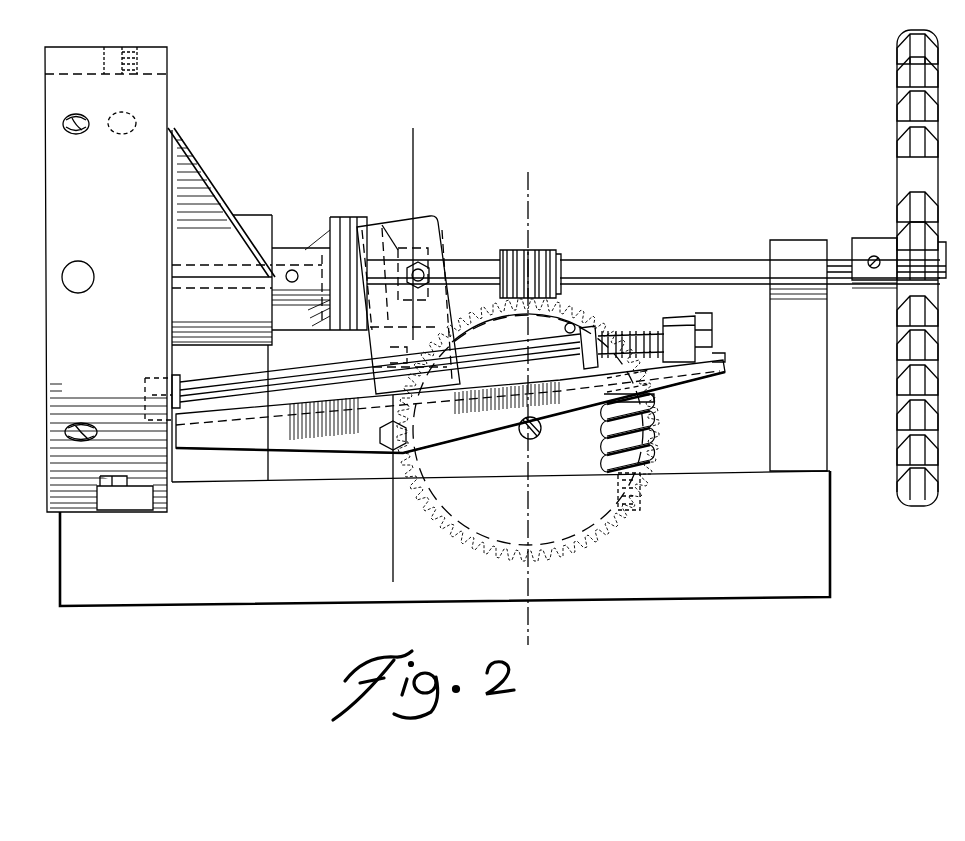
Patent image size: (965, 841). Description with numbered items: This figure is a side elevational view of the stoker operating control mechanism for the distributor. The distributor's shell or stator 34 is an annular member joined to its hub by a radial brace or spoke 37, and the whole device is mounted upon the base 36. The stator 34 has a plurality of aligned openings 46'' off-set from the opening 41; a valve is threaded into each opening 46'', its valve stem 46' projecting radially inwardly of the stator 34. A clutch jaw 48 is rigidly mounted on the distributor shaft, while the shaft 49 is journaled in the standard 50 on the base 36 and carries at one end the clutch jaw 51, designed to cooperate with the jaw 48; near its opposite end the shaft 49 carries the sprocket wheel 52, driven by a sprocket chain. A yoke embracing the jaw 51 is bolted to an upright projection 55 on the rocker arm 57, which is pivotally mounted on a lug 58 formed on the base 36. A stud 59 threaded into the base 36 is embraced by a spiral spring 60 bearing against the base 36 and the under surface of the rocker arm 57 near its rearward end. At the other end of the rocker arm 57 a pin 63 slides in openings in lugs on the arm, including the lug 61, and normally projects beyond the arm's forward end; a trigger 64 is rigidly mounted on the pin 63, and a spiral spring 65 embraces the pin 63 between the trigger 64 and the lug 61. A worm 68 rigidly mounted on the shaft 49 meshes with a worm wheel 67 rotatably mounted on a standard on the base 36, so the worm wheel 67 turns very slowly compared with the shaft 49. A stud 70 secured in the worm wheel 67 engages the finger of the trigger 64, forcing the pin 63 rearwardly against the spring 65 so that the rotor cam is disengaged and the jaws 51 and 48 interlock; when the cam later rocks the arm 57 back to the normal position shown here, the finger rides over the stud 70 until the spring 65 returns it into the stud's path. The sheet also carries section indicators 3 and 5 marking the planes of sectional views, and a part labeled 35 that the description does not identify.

The stator 34 is at (52, 178).
The bracket 35 is at (256, 226).
The base 36 is at (232, 600).
The radial brace 37 is at (205, 188).
The opening 41 is at (137, 120).
The valve stem 46' is at (87, 258).
The openings 46'' is at (87, 277).
The clutch jaw 48 is at (334, 220).
The shaft 49 is at (668, 263).
The standard 50 is at (778, 383).
The clutch jaw 51 is at (358, 218).
The sprocket wheel 52 is at (900, 425).
The upright projection 55 is at (376, 345).
The rocker arm 57 is at (340, 442).
The lug 58 is at (378, 468).
The stud 59 is at (617, 445).
The spiral spring 60 is at (610, 418).
The lug 61 is at (680, 316).
The pin 63 is at (220, 383).
The trigger 64 is at (584, 322).
The spiral spring 65 is at (633, 330).
The worm wheel 67 is at (557, 307).
The worm 68 is at (547, 248).
The stud 70 is at (564, 330).
The section line 3- 3 is at (370, 572).
The section line 5- 5 is at (558, 627).